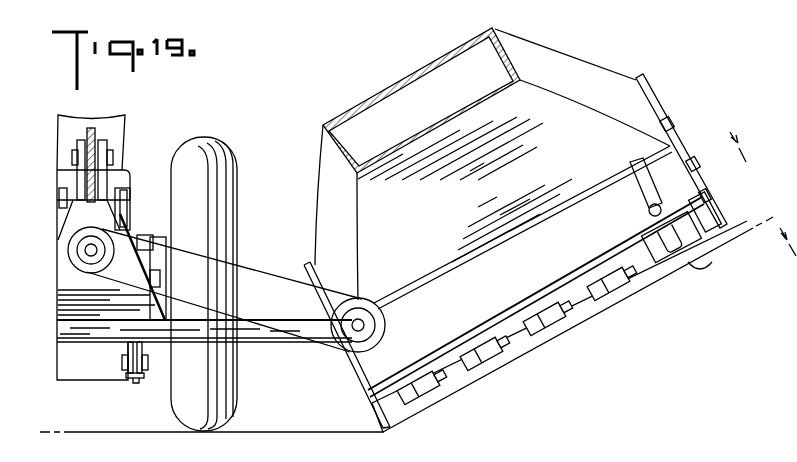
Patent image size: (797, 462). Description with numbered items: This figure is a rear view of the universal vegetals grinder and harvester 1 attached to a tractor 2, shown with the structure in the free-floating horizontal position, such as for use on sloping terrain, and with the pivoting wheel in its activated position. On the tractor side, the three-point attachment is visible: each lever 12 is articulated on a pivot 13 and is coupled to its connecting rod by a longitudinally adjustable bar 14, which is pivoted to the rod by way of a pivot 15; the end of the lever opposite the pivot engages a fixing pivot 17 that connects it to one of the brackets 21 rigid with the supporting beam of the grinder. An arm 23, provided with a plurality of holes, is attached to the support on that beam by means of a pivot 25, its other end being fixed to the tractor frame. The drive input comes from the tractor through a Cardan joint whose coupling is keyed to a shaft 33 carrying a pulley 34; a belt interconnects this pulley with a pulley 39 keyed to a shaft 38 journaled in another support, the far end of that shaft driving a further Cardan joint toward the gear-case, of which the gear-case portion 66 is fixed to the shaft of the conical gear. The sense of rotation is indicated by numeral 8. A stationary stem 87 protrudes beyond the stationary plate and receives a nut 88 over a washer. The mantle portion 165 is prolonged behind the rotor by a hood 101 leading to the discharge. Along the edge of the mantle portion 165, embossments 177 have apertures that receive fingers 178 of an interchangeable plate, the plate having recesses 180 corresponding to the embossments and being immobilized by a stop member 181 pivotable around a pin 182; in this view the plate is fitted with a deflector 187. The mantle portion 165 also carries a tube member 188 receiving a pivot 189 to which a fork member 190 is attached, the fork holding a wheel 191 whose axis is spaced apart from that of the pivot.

The universal vegetals grinder and harvester 1 is at (367, 89).
The tractor 2 is at (160, 143).
The sense of rotation 8 is at (546, 262).
The lever 12 is at (140, 379).
The pivot 13 is at (108, 150).
The longitudinally adjustable bar 14 is at (129, 229).
The pivot 15 is at (130, 196).
The fixing pivot 17 is at (122, 362).
The bracket 21 is at (130, 380).
The arm 23 is at (91, 127).
The pivot 25 is at (97, 150).
The shaft 33 is at (88, 249).
The pulley 34 is at (69, 240).
The shaft 38 is at (367, 300).
The pulley 39 is at (353, 300).
The gear-case portion 66 is at (348, 381).
The stationary stem 87 is at (678, 120).
The nut 88 is at (684, 134).
The hood 101 is at (548, 60).
The mantle portion 165 is at (540, 261).
The embossment 177 is at (431, 372).
The finger 178 is at (522, 348).
The recess 180 is at (542, 326).
The stop member 181 is at (719, 219).
The pin 182 is at (702, 195).
The deflector 187 is at (397, 411).
The tube member 188 is at (636, 186).
The pivot 189 is at (660, 206).
The fork member 190 is at (644, 229).
The wheel 191 is at (694, 264).